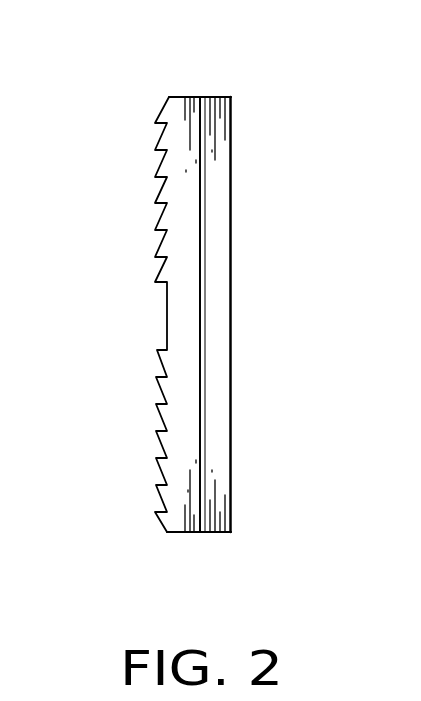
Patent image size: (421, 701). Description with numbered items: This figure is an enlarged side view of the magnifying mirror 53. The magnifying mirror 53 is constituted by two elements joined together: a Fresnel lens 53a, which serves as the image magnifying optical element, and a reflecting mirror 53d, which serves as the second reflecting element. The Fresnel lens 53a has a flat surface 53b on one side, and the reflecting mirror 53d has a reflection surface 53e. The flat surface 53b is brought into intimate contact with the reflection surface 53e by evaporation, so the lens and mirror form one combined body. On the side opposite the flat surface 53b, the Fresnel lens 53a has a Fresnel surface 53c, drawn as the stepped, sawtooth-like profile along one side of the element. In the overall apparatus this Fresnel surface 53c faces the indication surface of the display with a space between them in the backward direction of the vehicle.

The magnifying mirror 53 is at (223, 96).
The Fresnel lens 53a is at (177, 532).
The flat surface 53b is at (202, 207).
The Fresnel surface 53c is at (160, 238).
The reflecting mirror 53d is at (222, 532).
The reflection surface 53e is at (198, 138).